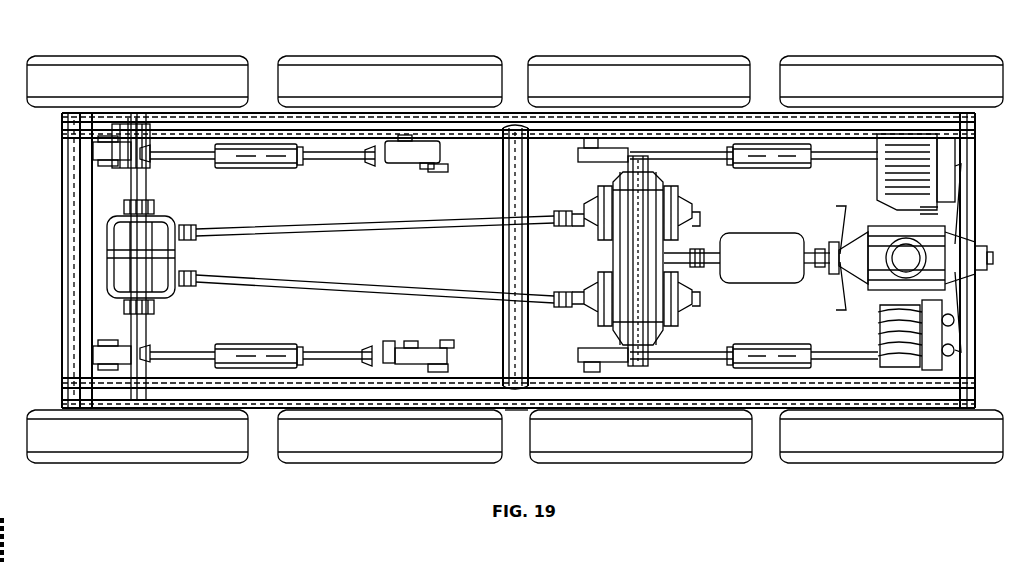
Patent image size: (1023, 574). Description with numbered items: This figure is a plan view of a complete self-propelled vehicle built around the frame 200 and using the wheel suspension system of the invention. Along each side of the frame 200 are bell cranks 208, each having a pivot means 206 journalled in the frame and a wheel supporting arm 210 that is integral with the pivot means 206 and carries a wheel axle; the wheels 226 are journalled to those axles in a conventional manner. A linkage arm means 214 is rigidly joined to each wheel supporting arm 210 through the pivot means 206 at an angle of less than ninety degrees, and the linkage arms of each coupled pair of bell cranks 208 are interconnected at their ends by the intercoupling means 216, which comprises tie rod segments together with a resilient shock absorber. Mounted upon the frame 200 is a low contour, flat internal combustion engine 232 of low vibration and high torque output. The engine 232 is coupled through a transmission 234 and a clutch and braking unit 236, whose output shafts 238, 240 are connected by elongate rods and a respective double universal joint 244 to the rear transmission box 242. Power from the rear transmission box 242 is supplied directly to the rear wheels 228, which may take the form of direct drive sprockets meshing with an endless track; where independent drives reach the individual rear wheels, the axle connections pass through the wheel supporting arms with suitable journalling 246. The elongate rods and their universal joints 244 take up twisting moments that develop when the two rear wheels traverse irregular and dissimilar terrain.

The frame 200 is at (504, 318).
The pivot means 206 is at (438, 347).
The bell crank 208 is at (125, 332).
The wheel supporting arm 210 is at (540, 410).
The linkage arm means 214 is at (385, 348).
The intercoupling means 216 is at (341, 345).
The wheels 226 is at (410, 75).
The fourth wheel 228 is at (103, 71).
The internal combustion engine 232 is at (974, 238).
The transmission 234 is at (785, 282).
The clutch and braking unit 236 is at (677, 251).
The output shaft 238 is at (585, 214).
The output shaft 240 is at (428, 285).
The rear transmission box 242 is at (162, 221).
The double universal joint 244 is at (201, 237).
The journalling 246 is at (149, 129).